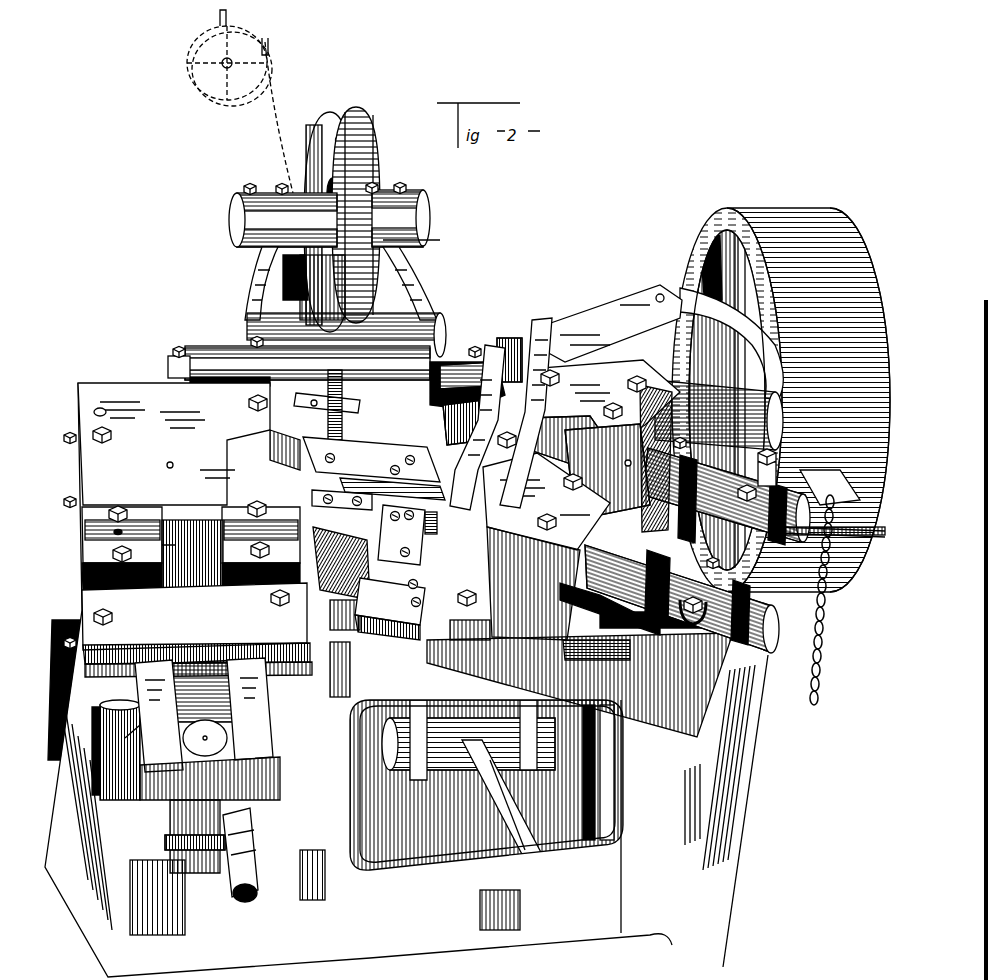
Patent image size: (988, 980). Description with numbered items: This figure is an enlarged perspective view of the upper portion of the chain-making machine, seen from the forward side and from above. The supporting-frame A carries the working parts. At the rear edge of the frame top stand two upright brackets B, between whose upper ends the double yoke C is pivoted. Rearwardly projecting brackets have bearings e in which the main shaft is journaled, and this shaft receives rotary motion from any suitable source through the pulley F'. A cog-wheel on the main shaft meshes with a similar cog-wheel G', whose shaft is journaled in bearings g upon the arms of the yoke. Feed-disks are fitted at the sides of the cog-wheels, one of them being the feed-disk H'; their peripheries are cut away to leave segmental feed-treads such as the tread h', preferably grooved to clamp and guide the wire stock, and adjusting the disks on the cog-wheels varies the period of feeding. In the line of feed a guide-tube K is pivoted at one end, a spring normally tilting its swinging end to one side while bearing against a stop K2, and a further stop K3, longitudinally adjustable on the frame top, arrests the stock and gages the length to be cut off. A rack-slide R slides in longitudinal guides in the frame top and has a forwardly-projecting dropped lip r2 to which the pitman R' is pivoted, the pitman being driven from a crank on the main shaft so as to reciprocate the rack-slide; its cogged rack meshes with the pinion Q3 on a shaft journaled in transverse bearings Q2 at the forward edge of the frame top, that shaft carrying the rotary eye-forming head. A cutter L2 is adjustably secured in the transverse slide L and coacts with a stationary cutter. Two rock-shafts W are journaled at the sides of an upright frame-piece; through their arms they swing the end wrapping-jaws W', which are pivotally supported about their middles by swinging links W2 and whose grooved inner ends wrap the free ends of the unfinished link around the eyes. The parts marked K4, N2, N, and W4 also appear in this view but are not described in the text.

The pulley F' is at (781, 400).
The feed-disk H' is at (324, 221).
The cog-wheel G' is at (364, 215).
The bearings g is at (253, 213).
The segmental feed-tread h' is at (419, 241).
The double yoke C is at (390, 263).
The upright brackets B is at (443, 333).
The bearings e is at (178, 367).
The supporting-frame A is at (406, 680).
The guide-tube K is at (303, 427).
The transverse slide L is at (374, 473).
The stop K2 is at (407, 535).
The stop K3 is at (370, 592).
The wedge K4 is at (365, 560).
The transverse bearings Q2 is at (110, 515).
The pinion Q3 is at (183, 522).
The rack-slide R is at (198, 729).
The pitman R' is at (142, 744).
The dropped lip r2 is at (240, 700).
The cutter L2 is at (260, 862).
The bracket N2 is at (840, 485).
The rod N is at (880, 545).
The lever W4 is at (552, 327).
The end wrapping-jaws W' is at (601, 510).
The rock-shafts W is at (731, 599).
The swinging links W2 is at (518, 343).